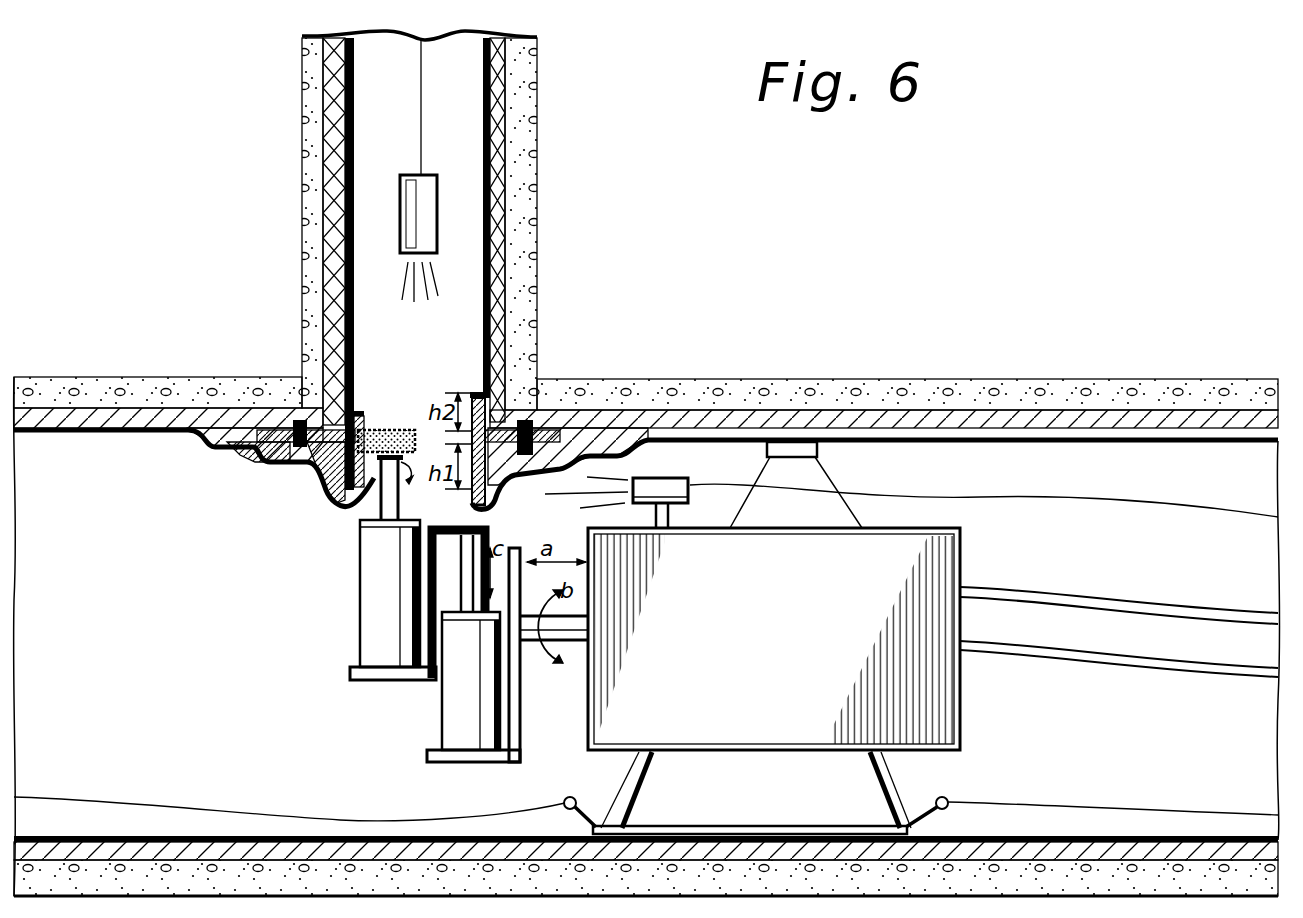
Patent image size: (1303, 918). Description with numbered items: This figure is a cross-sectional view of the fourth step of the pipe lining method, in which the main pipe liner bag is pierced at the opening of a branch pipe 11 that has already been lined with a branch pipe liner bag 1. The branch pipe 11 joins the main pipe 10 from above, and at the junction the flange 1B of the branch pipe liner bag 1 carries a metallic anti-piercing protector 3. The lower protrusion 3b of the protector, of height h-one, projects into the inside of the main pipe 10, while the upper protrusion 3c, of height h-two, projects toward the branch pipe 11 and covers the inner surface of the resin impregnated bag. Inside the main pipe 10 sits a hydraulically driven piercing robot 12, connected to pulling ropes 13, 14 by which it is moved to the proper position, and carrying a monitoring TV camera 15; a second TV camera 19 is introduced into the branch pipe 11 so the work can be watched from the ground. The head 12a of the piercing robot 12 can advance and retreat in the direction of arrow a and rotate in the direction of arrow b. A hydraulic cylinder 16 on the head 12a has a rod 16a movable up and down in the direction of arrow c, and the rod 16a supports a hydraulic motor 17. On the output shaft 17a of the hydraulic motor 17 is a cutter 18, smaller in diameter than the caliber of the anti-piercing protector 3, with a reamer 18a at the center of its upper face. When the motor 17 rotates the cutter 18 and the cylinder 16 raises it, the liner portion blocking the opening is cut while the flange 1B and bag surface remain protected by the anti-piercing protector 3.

The branch pipe liner bag 1 is at (354, 161).
The TV camera 19 is at (431, 177).
The branch pipe 11 is at (537, 211).
The main pipe 10 is at (866, 382).
The anti-piercing protector 3 is at (372, 405).
The protrusion 3c is at (356, 390).
The protrusion 3b is at (494, 498).
The cutter 18 is at (422, 428).
The reamer 18a is at (386, 428).
The flange 1B is at (228, 436).
The output shaft 17a is at (379, 508).
The hydraulic motor 17 is at (362, 636).
The rod 16a is at (452, 578).
The hydraulic cylinder 16 is at (457, 730).
The head 12a is at (576, 648).
The piercing robot 12 is at (961, 560).
The monitoring TV camera 15 is at (666, 478).
The pulling rope 13 is at (160, 800).
The pulling rope 14 is at (1034, 810).